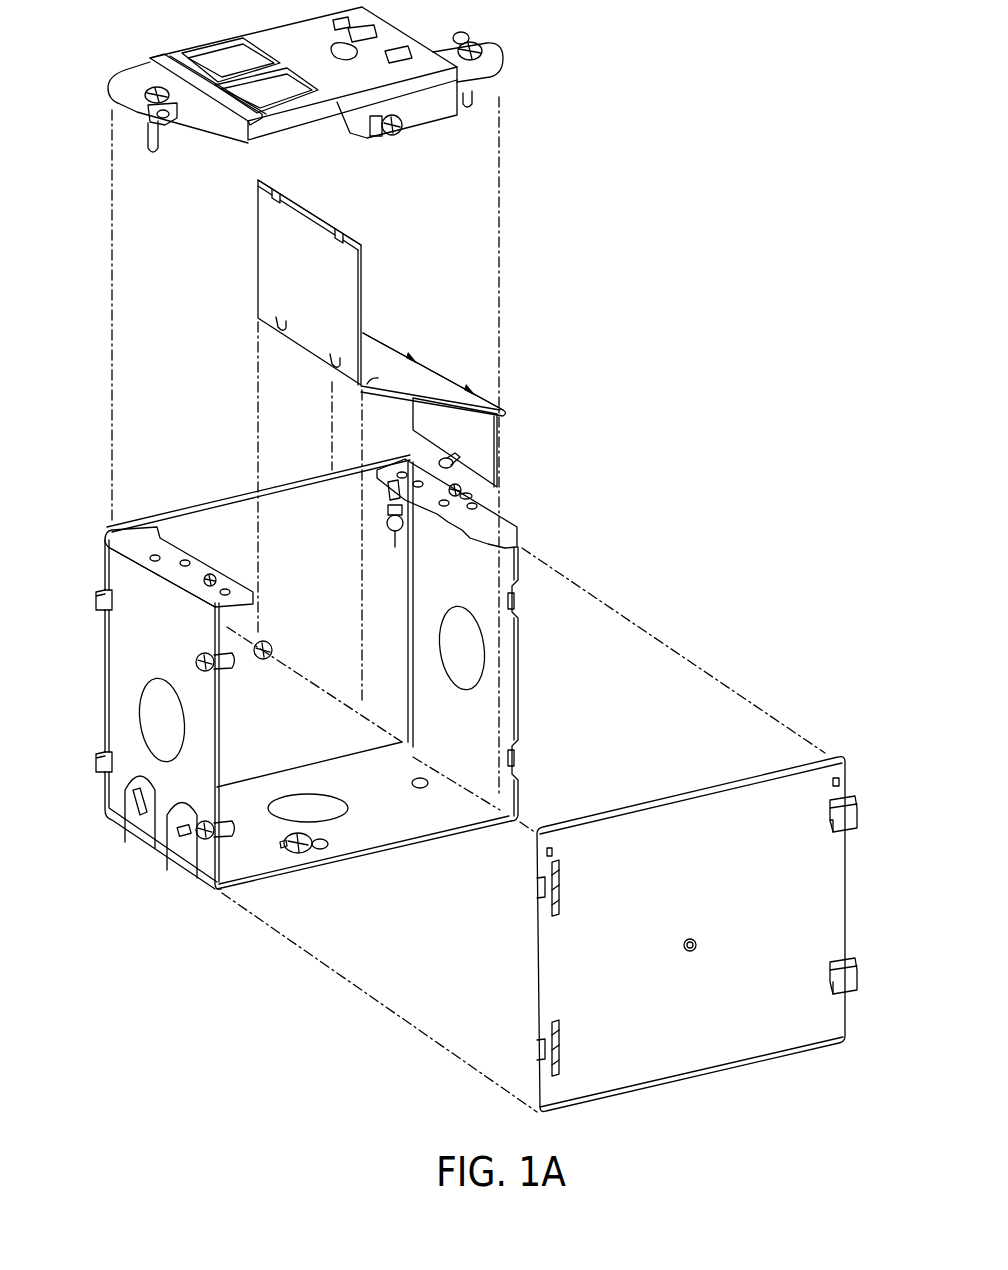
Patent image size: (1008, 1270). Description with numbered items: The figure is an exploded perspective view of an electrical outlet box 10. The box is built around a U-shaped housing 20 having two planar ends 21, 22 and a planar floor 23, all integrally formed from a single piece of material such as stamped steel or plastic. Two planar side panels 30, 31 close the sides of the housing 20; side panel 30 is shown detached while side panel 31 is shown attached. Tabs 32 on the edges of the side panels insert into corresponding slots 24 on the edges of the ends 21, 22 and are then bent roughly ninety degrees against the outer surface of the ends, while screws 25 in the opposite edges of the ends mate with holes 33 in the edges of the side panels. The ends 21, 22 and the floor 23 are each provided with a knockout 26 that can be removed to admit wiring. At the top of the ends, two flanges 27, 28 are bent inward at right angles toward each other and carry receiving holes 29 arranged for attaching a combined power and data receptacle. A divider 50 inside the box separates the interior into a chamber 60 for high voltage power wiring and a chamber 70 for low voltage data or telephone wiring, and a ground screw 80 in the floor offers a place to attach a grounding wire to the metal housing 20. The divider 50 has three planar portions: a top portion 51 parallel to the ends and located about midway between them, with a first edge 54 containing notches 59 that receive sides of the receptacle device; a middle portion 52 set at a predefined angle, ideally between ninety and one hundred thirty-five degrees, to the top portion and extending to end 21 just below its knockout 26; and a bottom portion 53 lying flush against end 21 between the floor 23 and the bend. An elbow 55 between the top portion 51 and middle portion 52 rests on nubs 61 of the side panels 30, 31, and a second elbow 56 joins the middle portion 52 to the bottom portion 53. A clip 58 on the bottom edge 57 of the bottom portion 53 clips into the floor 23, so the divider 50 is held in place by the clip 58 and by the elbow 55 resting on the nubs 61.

The electrical outlet box 10 is at (524, 483).
The U-shaped housing 20 is at (517, 563).
The planar end 21 is at (504, 678).
The planar end 22 is at (118, 640).
The planar floor 23 is at (379, 809).
The slots 24 is at (106, 607).
The screws 25 is at (196, 656).
The knockout 26 is at (150, 714).
The flange 27 is at (490, 531).
The flange 28 is at (138, 532).
The receiving holes 29 is at (138, 557).
The side panel 30 is at (830, 888).
The side panel 31 is at (288, 728).
The tabs 32 is at (98, 598).
The holes 33 is at (397, 490).
The divider 50 is at (308, 299).
The top portion 51 is at (278, 249).
The middle portion 52 is at (405, 385).
The bottom portion 53 is at (443, 444).
The first edge 54 is at (310, 212).
The elbow 55 is at (357, 397).
The elbow 56 is at (438, 357).
The bottom edge 57 is at (462, 484).
The clip 58 is at (458, 459).
The notches 59 is at (277, 192).
The chamber 60 is at (212, 527).
The nubs 61 is at (263, 662).
The chamber 70 is at (322, 494).
The ground screw 80 is at (301, 846).